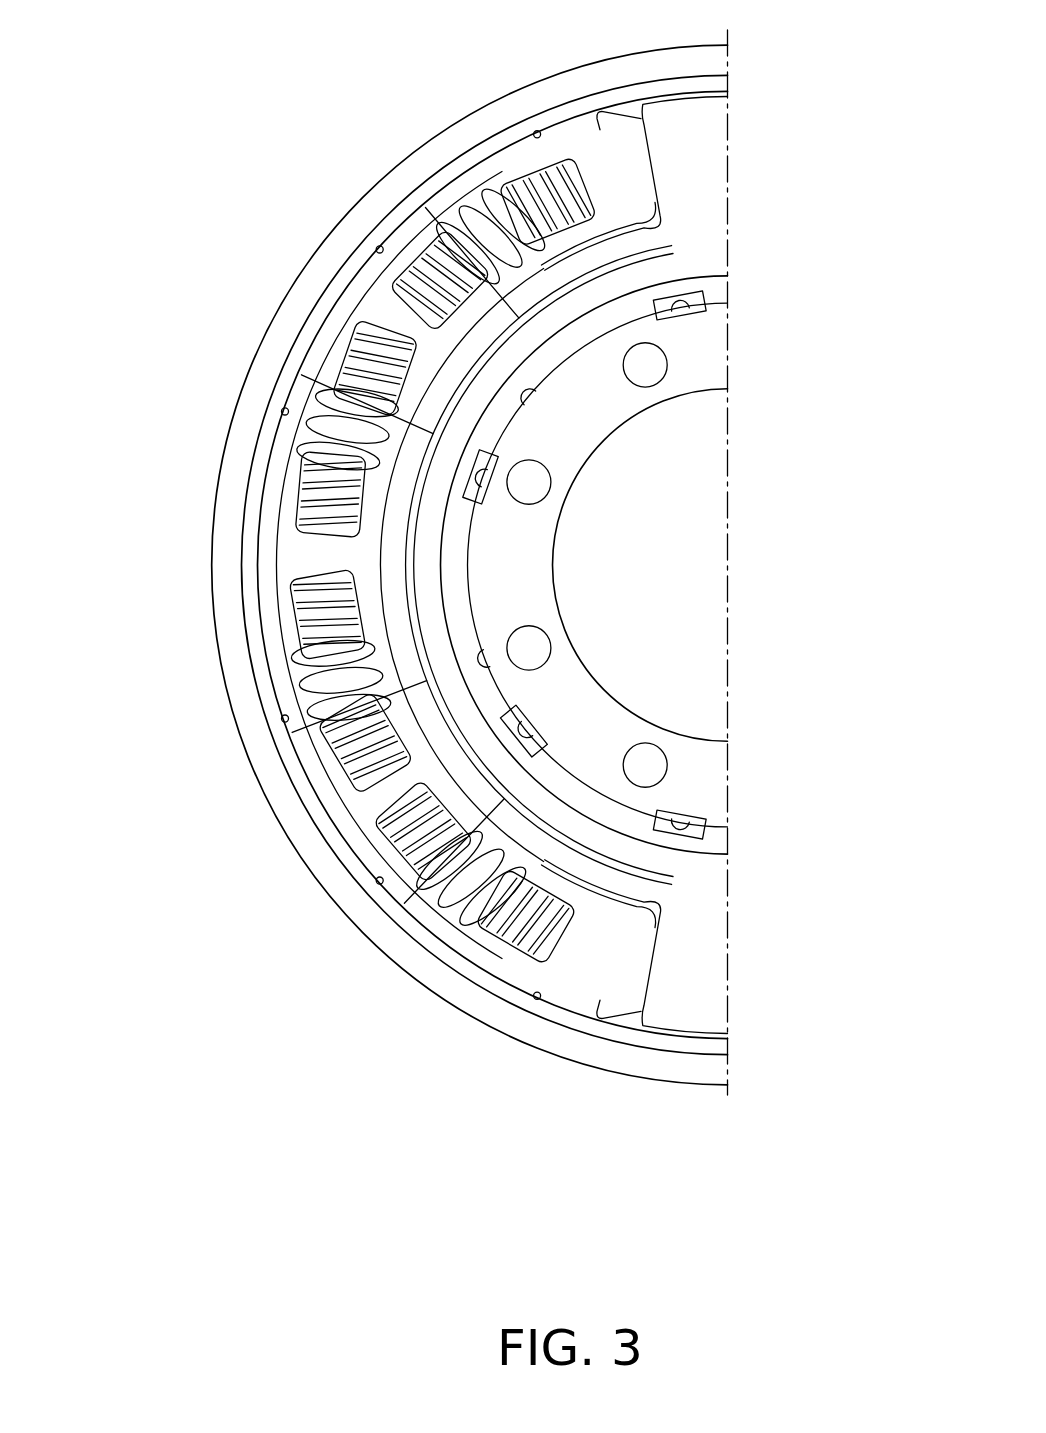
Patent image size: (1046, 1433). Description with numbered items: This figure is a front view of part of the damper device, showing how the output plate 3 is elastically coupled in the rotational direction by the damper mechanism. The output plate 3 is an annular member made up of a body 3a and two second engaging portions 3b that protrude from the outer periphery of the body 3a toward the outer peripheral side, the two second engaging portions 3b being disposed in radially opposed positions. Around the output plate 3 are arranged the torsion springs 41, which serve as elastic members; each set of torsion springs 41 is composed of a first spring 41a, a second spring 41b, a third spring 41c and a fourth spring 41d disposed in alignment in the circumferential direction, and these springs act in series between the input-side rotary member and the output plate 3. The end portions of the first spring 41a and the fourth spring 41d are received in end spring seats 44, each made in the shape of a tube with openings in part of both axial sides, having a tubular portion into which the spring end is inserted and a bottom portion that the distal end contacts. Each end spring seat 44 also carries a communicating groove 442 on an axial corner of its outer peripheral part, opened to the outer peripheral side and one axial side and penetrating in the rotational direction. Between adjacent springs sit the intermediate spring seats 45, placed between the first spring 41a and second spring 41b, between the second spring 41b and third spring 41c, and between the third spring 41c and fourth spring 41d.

The output plate 3 is at (745, 252).
The body 3a is at (605, 293).
The second engaging portion 3b is at (714, 188).
The torsion springs 41 is at (295, 418).
The first spring 41a is at (478, 213).
The second spring 41b is at (313, 417).
The third spring 41c is at (313, 695).
The fourth spring 41d is at (457, 903).
The end spring seat 44 is at (629, 96).
The communicating groove 442 is at (562, 134).
The intermediate spring seat 45 is at (360, 265).